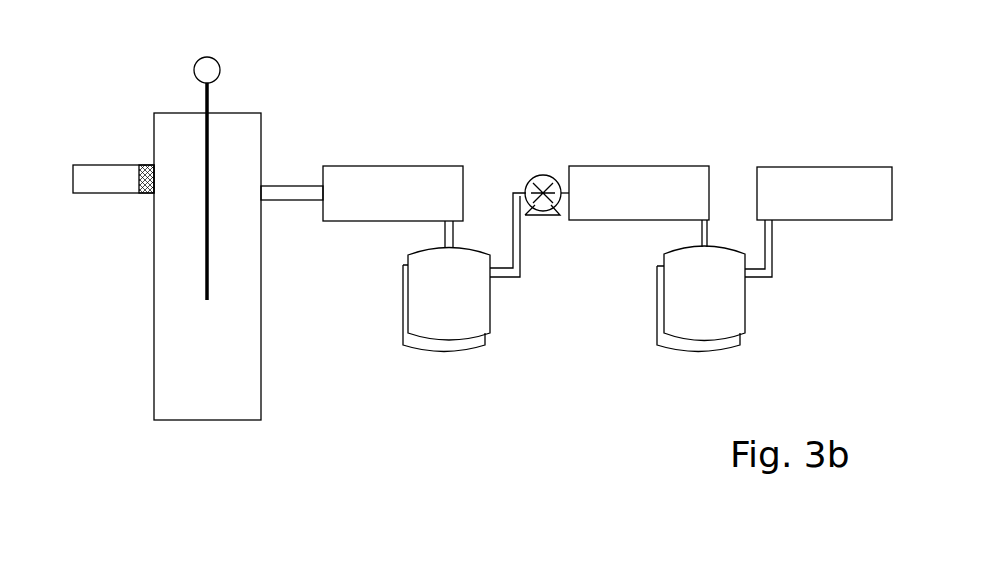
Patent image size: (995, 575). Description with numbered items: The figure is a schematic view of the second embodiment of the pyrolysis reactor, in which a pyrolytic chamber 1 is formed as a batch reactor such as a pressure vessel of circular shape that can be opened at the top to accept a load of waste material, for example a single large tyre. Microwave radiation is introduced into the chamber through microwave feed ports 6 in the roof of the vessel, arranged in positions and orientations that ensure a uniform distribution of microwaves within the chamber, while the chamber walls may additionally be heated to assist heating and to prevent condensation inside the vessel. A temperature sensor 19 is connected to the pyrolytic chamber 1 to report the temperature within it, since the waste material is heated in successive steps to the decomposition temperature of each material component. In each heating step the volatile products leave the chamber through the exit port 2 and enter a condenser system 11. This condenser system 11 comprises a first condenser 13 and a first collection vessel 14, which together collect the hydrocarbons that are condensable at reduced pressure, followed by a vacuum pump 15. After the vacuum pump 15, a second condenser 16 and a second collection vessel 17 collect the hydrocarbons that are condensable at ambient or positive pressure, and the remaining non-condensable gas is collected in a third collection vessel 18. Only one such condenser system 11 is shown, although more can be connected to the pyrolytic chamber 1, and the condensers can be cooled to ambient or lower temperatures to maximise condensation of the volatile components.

The pyrolytic chamber 1 is at (154, 290).
The exit port 2 is at (282, 192).
The microwave feed port 6 is at (92, 170).
The condenser system 11 is at (796, 122).
The first condenser 13 is at (355, 208).
The first collection vessel 14 is at (418, 320).
The vacuum pump 15 is at (540, 180).
The second condenser 16 is at (611, 210).
The second collection vessel 17 is at (733, 317).
The third collection vessel 18 is at (800, 198).
The temperature sensor 19 is at (212, 64).